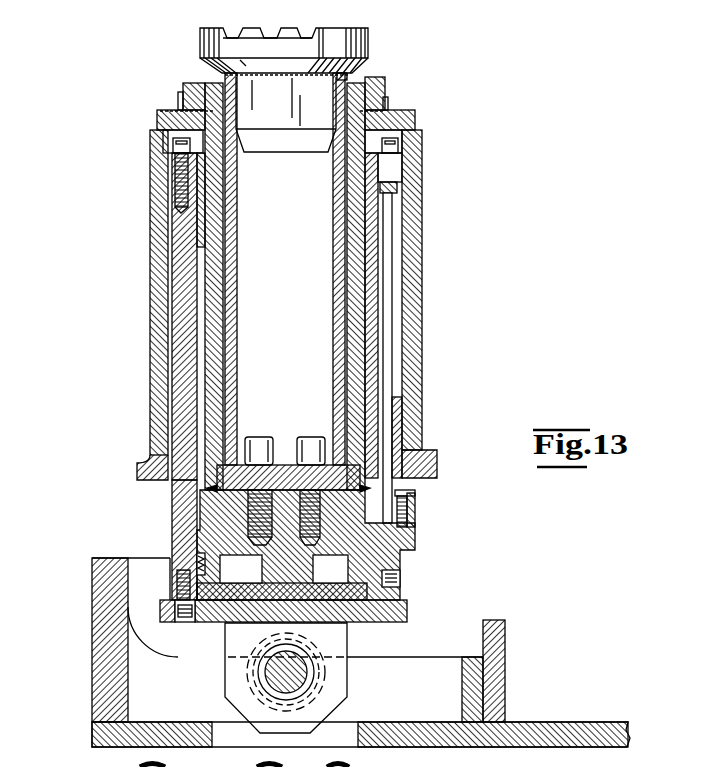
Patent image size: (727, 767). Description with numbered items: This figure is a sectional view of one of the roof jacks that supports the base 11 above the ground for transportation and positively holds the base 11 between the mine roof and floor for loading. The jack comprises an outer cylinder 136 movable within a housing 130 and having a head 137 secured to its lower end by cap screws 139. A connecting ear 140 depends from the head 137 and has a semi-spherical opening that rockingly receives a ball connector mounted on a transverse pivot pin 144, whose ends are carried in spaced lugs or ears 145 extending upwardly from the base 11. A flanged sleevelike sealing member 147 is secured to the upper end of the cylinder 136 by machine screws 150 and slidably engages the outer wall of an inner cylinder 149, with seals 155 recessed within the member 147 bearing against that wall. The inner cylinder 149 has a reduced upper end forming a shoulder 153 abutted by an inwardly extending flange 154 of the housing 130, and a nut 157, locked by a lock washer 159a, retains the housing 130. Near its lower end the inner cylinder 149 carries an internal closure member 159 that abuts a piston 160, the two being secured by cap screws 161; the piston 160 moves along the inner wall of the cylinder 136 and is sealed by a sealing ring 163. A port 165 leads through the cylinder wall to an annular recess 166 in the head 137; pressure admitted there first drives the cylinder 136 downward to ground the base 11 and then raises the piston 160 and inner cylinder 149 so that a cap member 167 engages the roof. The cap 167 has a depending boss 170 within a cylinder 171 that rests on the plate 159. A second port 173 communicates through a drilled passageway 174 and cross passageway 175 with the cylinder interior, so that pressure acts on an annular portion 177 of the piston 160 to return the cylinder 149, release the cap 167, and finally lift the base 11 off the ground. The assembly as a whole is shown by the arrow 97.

The base 11 is at (585, 722).
The cylinder assembly 97 is at (426, 178).
The housing 130 is at (418, 310).
The outer cylinder 136 is at (172, 505).
The head 137 is at (210, 620).
The cap screws 139 is at (174, 608).
The connecting ear 140 is at (340, 637).
The transverse pivot pin 144 is at (305, 675).
The lugs or ears 145 is at (445, 657).
The flanged sleevelike sealing member 147 is at (192, 210).
The inner cylinder 149 is at (207, 343).
The machine screws 150 is at (395, 146).
The shoulder 153 is at (380, 108).
The inwardly extending flange 154 is at (383, 86).
The seals 155 is at (372, 228).
The nut 157 is at (205, 86).
The lock washer 159a is at (182, 98).
The closure member 159 is at (350, 475).
The piston 160 is at (362, 540).
The cap screws 161 is at (258, 437).
The sealing ring 163 is at (200, 578).
The port 165 is at (385, 577).
The annular recess 166 is at (284, 569).
The cap member 167 is at (362, 45).
The depending boss 170 is at (283, 130).
The cylinder 171 is at (352, 70).
The port 173 is at (415, 510).
The drilled passageway 174 is at (387, 413).
The cross passageway 175 is at (378, 255).
The annular portion 177 is at (400, 494).